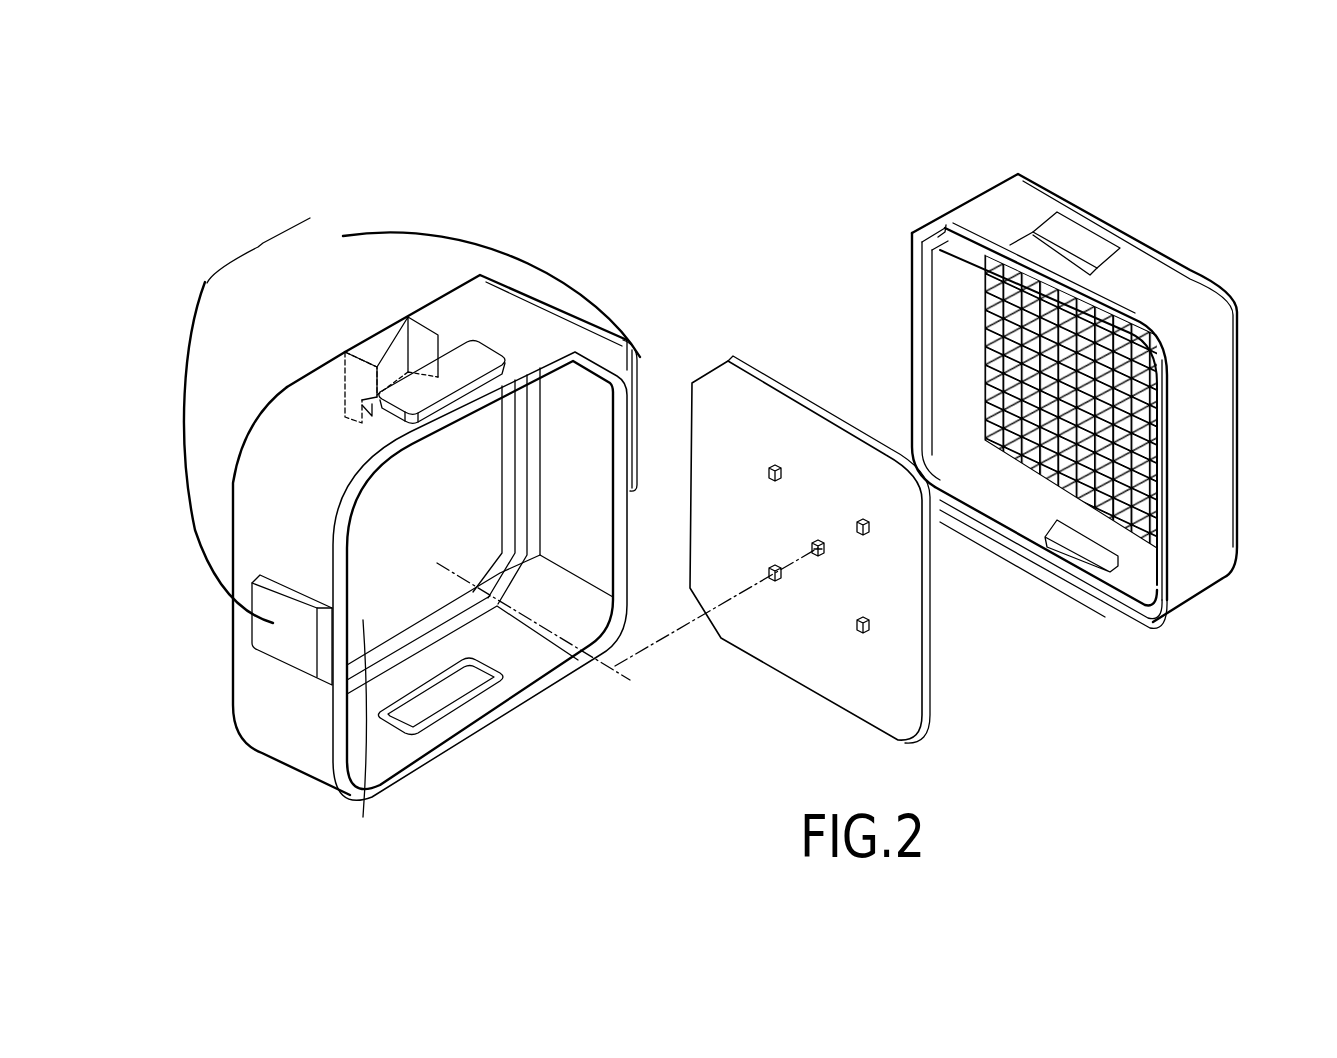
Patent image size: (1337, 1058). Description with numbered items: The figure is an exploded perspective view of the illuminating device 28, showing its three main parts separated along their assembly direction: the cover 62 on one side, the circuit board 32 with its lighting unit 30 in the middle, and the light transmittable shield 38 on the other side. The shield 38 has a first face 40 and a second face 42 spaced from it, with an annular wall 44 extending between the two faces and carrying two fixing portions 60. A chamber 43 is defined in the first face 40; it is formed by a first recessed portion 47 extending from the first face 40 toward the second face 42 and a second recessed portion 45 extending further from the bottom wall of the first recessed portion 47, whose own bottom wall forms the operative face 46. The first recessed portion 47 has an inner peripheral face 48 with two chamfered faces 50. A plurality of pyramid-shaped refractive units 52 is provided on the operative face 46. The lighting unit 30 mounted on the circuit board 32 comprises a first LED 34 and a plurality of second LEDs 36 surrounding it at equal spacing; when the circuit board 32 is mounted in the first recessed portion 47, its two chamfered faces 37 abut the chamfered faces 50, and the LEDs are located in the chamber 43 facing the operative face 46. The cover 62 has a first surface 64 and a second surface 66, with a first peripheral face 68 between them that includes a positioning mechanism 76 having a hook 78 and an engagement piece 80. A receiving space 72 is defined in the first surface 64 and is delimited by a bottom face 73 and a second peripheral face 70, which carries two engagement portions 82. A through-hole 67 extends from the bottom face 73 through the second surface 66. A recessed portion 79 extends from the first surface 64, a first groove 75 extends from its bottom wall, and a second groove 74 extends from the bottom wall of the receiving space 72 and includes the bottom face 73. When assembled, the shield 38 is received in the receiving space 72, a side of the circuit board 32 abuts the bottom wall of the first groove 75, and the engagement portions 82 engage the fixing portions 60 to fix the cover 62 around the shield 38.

The illuminating device 28 is at (525, 182).
The lighting unit 30 is at (810, 535).
The circuit board 32 is at (811, 410).
The first light emitting diode 34 is at (820, 541).
The second light emitting diodes 36 is at (775, 464).
The chamfered faces 37 is at (712, 374).
The light transmittable shield 38 is at (1112, 450).
The first face 40 is at (1153, 603).
The second face 42 is at (1237, 548).
The chamber 43 is at (1160, 690).
The annular wall 44 is at (1200, 552).
The second recessed portion 45 is at (1137, 553).
The operative face 46 is at (1107, 513).
The first recessed portion 47 is at (1143, 600).
The inner peripheral face 48 is at (1003, 530).
The chamfered faces 50 is at (938, 237).
The refractive units 52 is at (1070, 480).
The fixing portions 60 is at (1077, 242).
The cover 62 is at (313, 777).
The first surface 64 is at (457, 742).
The second surface 66 is at (287, 387).
The through-hole 67 is at (393, 352).
The first peripheral face 68 is at (337, 382).
The second peripheral face 70 is at (410, 748).
The receiving space 72 is at (662, 722).
The bottom face 73 is at (364, 733).
The second groove 74 is at (455, 603).
The first groove 75 is at (507, 582).
The positioning mechanism 76 is at (258, 247).
The hook 78 is at (228, 452).
The recessed portion 79 is at (573, 520).
The engagement piece 80 is at (343, 236).
The engagement portions 82 is at (461, 349).